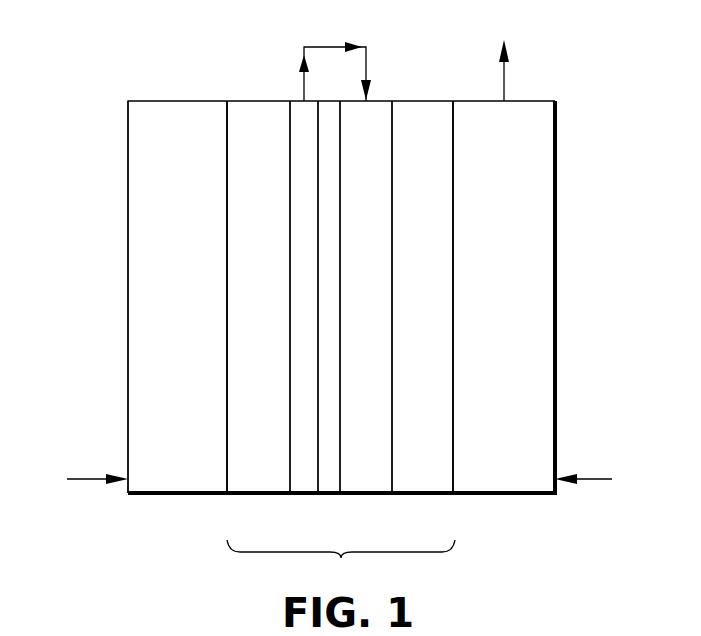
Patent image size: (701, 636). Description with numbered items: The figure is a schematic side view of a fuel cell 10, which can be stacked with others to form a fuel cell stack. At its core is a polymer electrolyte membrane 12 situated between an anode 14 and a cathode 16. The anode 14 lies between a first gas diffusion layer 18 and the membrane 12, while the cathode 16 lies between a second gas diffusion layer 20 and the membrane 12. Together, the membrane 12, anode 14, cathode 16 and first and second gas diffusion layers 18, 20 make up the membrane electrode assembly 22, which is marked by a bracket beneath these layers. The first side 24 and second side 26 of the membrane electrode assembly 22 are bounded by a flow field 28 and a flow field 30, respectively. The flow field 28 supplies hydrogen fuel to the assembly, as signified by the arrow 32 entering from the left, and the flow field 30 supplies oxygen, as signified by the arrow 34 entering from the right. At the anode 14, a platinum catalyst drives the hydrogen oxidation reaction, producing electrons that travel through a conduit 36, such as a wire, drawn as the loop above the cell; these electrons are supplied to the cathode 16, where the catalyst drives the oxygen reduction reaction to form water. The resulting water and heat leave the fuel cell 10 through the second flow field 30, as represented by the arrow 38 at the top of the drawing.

The fuel cell 10 is at (616, 236).
The polymer electrolyte membrane 12 is at (323, 101).
The anode 14 is at (303, 493).
The cathode 16 is at (365, 493).
The first gas diffusion layer 18 is at (258, 101).
The second gas diffusion layer 20 is at (423, 101).
The membrane electrode assembly 22 is at (341, 564).
The first side 24 is at (227, 101).
The second side 26 is at (455, 101).
The flow field 28 is at (162, 101).
The flow field 30 is at (538, 101).
The arrow 32 is at (88, 475).
The arrow 34 is at (593, 475).
The conduit 36 is at (304, 82).
The arrow 38 is at (506, 88).